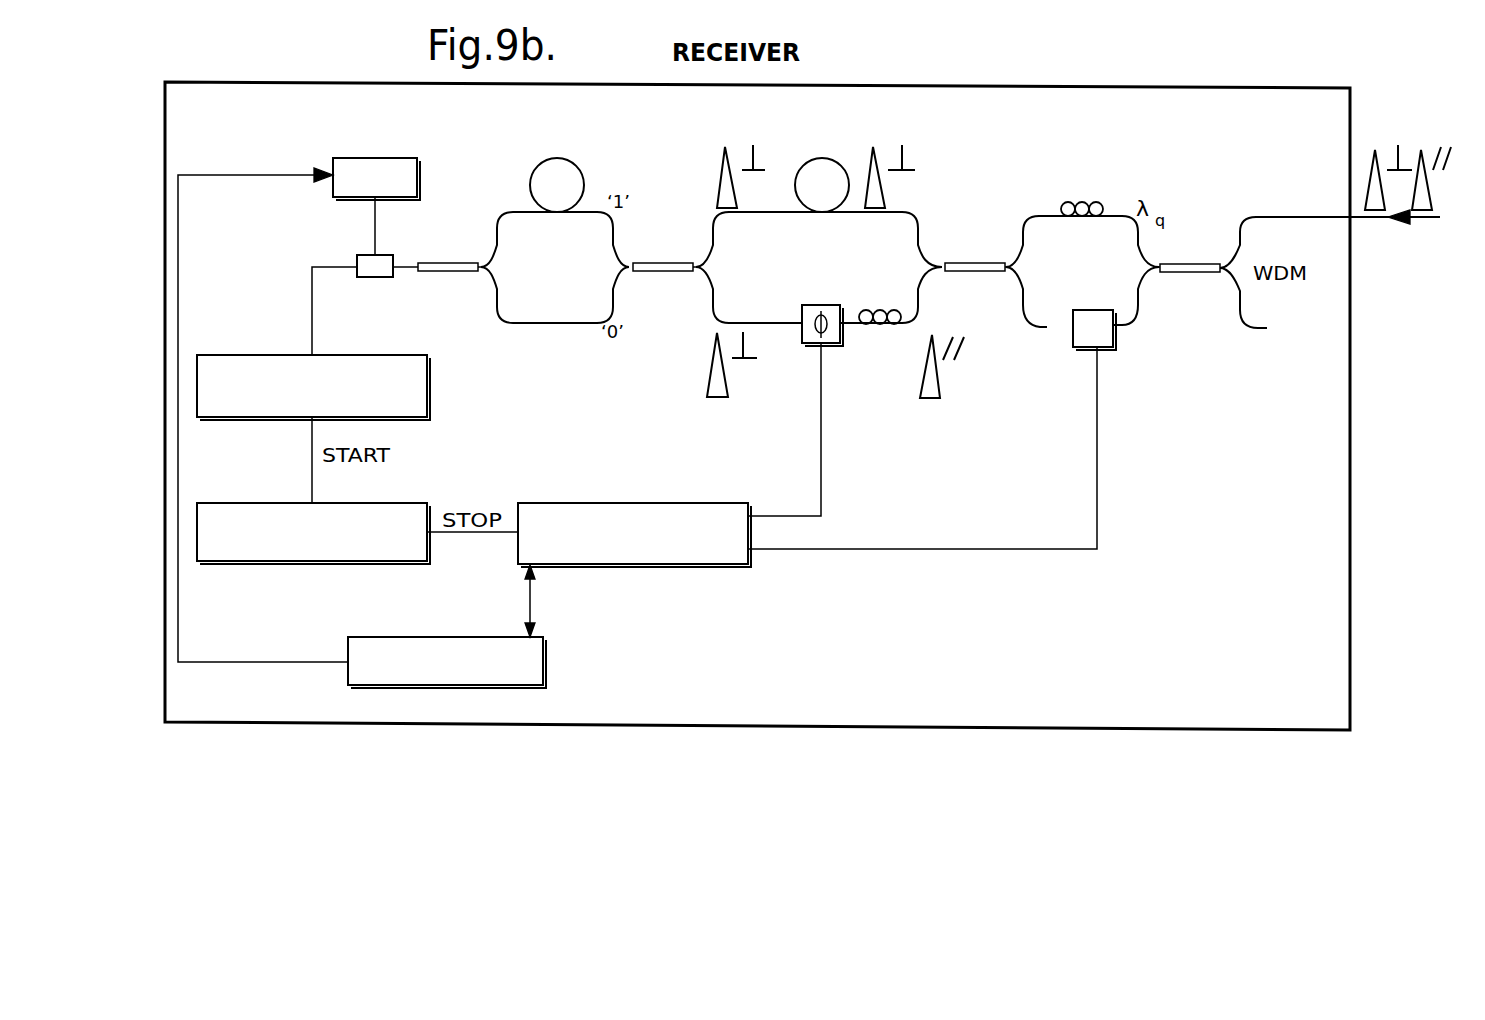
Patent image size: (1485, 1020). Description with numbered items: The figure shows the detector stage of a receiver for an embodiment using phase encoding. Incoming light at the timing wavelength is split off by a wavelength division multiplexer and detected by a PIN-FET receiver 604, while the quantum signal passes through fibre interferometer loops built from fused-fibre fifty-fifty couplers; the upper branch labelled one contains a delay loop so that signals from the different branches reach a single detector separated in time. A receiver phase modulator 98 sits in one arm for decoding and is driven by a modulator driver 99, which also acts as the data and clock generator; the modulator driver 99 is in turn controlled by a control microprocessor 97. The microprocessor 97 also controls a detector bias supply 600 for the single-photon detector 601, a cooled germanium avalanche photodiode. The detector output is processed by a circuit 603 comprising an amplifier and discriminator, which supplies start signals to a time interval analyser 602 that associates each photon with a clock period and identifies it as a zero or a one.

The detector bias supply 600 is at (418, 185).
The single-photon detector 601 is at (393, 256).
The time interval analyser 602 is at (428, 545).
The amplifier and discriminator circuit 603 is at (427, 398).
The PIN-FET receiver 604 is at (1080, 349).
The control microprocessor 97 is at (543, 652).
The receiver phase modulator 98 is at (841, 333).
The modulator driver 99 is at (740, 566).